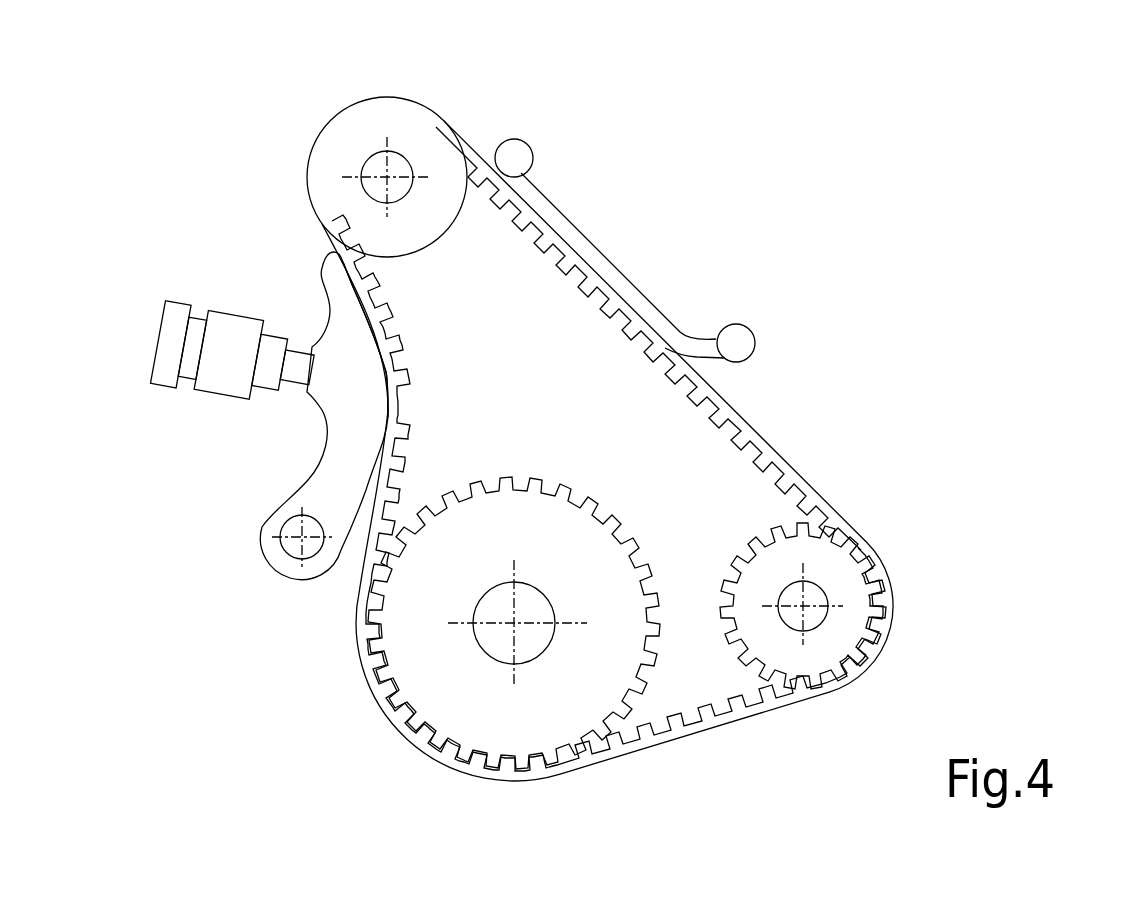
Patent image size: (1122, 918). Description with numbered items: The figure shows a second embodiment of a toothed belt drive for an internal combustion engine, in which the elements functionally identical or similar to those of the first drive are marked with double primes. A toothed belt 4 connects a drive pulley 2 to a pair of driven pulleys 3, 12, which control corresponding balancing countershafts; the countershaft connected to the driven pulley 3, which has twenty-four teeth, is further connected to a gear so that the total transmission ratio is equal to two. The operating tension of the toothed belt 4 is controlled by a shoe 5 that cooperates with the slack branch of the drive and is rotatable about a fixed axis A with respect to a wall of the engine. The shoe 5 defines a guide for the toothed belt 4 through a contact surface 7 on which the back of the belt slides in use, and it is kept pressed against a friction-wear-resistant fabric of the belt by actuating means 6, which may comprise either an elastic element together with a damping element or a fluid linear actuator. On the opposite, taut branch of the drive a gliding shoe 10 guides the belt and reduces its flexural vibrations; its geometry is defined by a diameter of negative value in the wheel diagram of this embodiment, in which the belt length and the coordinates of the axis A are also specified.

The drive pulley 2 is at (505, 727).
The driven pulley 3 is at (325, 132).
The toothed belt 4 is at (770, 455).
The shoe 5 is at (332, 458).
The actuating means 6 is at (223, 330).
The contact surface 7 is at (396, 368).
The gliding shoe 10 is at (522, 163).
The driven pulley 12 is at (858, 613).
The fixed axis A is at (301, 538).